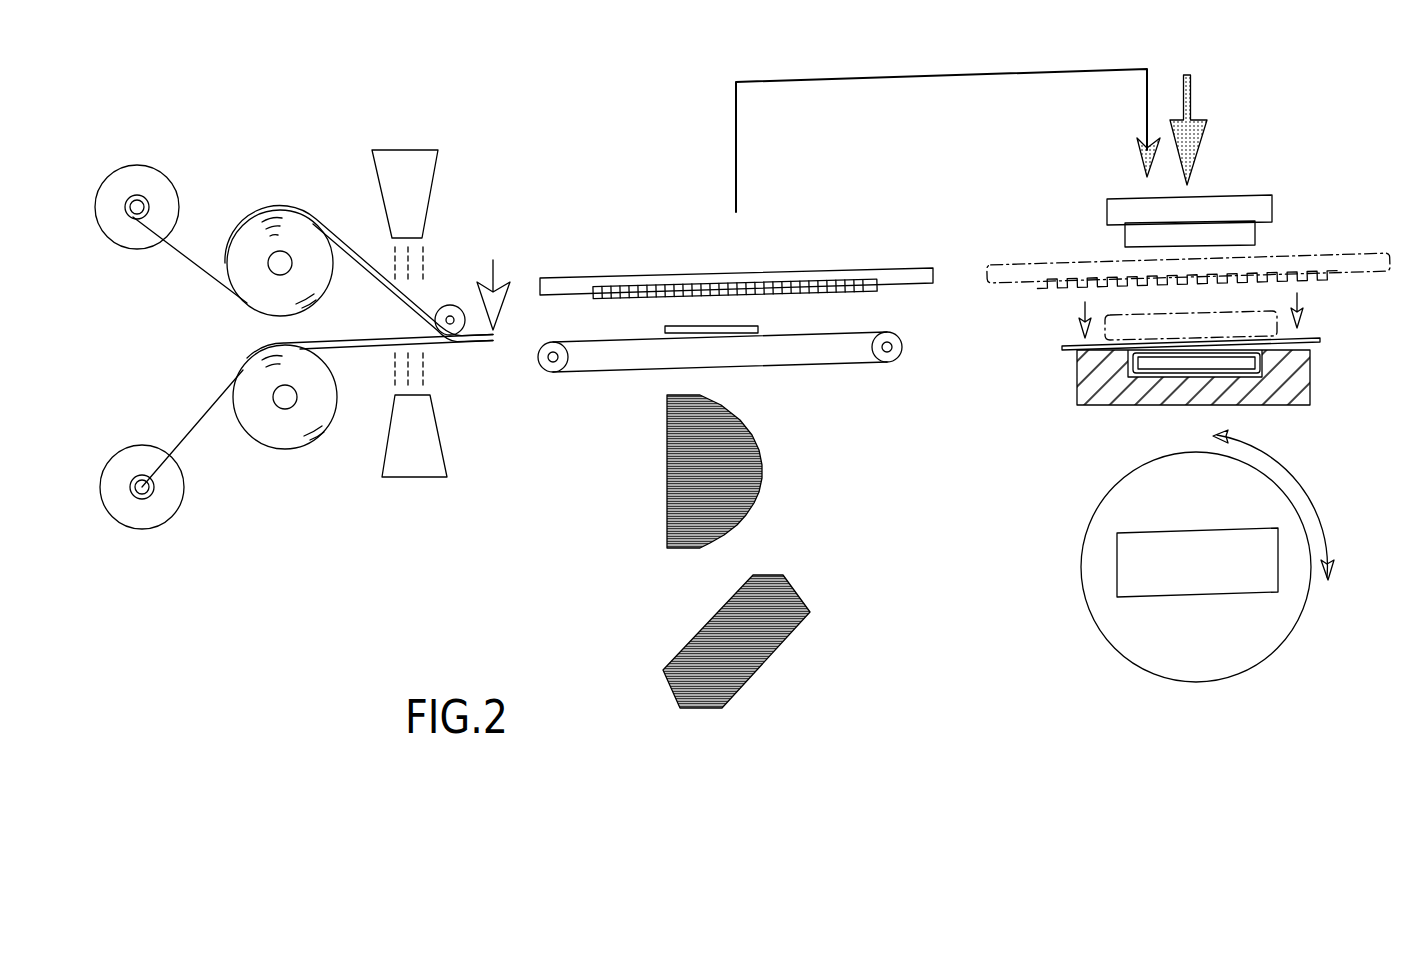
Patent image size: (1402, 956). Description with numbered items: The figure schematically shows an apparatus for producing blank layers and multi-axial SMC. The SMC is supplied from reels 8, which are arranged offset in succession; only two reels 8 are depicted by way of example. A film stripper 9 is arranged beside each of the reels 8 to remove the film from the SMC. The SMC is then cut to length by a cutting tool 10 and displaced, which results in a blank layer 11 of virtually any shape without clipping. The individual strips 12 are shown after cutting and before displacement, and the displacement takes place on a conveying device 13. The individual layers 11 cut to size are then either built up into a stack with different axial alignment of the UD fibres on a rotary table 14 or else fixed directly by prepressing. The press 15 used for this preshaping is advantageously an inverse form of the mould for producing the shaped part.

The reels 8 is at (297, 223).
The film stripper 9 is at (140, 175).
The cutting tool 10 is at (438, 162).
The blank layer 11 is at (780, 637).
The individual strips 12 is at (765, 470).
The conveying device 13 is at (600, 370).
The rotary table 14 is at (1160, 680).
The press 15 is at (1308, 375).